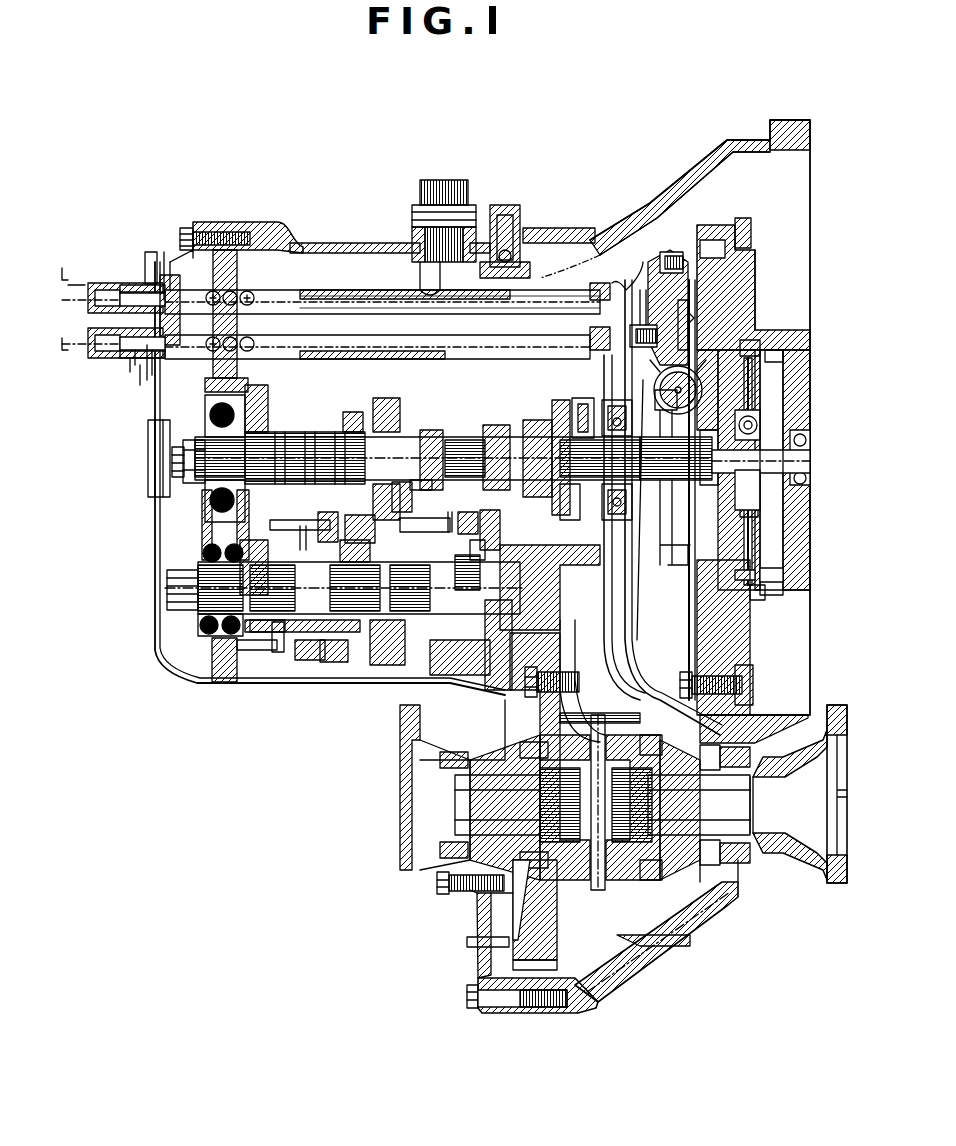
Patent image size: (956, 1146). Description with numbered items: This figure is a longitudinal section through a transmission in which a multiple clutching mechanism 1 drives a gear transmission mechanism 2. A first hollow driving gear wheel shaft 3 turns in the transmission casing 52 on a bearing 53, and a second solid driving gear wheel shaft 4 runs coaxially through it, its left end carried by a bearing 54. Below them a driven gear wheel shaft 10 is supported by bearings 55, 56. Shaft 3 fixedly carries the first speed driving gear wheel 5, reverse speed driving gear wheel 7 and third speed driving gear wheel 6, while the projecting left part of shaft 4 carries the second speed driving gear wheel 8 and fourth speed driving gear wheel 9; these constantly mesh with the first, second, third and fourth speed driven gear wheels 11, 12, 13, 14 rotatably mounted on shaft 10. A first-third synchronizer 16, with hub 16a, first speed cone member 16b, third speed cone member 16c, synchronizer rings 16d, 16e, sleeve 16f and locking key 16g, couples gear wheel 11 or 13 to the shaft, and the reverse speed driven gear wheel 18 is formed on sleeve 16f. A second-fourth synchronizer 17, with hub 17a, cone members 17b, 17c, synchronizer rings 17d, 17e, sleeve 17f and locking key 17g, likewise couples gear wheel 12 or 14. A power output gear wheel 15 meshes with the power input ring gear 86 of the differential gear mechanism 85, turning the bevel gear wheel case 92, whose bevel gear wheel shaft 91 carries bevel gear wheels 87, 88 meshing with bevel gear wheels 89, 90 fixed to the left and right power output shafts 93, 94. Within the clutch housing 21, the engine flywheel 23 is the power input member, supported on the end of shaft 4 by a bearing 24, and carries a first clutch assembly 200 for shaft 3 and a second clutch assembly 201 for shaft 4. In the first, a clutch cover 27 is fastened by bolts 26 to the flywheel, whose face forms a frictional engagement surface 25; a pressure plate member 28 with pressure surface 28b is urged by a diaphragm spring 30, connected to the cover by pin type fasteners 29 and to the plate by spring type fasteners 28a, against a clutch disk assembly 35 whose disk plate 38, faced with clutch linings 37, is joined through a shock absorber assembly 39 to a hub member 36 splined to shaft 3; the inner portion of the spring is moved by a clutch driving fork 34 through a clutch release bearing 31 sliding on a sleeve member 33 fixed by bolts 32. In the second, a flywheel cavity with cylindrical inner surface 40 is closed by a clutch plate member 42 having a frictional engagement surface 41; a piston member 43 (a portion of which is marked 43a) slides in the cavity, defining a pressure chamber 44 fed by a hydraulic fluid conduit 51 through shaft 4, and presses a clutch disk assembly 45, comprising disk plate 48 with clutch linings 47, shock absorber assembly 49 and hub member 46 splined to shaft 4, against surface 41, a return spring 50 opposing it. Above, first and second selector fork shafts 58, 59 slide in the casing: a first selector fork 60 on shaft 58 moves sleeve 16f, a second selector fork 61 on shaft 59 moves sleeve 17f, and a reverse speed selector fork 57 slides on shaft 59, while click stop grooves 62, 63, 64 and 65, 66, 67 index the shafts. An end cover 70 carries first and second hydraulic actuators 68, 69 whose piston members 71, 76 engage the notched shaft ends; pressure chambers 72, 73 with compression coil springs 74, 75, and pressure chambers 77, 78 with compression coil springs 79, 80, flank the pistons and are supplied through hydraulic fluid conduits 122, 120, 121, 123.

The multiple clutching mechanism 1 is at (780, 300).
The gear transmission mechanism 2 is at (322, 680).
The first hollow driving gear wheel shaft 3 is at (460, 440).
The second driving gear wheel shaft 4 is at (332, 440).
The first speed driving gear wheel 5 is at (492, 428).
The third speed driving gear wheel 6 is at (384, 402).
The reverse speed driving gear wheel 7 is at (428, 432).
The second speed driving gear wheel 8 is at (352, 412).
The fourth speed driving gear wheel 9 is at (268, 392).
The driven gear wheel shaft 10 is at (265, 634).
The first speed driven gear wheel 11 is at (490, 679).
The second speed driven gear wheel 12 is at (345, 660).
The third speed driven gear wheel 13 is at (390, 652).
The fourth speed driven gear wheel 14 is at (252, 650).
The power output gear wheel 15 is at (534, 548).
The first-third synchronizer 16 is at (400, 690).
The hub 16a is at (460, 566).
The first speed cone member 16b is at (482, 540).
The third speed cone member 16c is at (396, 504).
The synchronizer ring 16d is at (470, 512).
The synchronizer ring 16e is at (412, 520).
The first-third synchronizer sleeve 16f is at (450, 512).
The locking key 16g is at (428, 488).
The second-fourth synchronizer 17 is at (280, 660).
The hub 17a is at (352, 542).
The second speed cone member 17b is at (368, 530).
The fourth speed cone member 17c is at (268, 548).
The synchronizer ring 17d is at (330, 514).
The synchronizer ring 17e is at (285, 522).
The second-fourth synchronizer sleeve 17f is at (309, 524).
The locking key 17g is at (310, 650).
The reverse speed driven gear wheel 18 is at (430, 690).
The clutch housing 21 is at (673, 200).
The flywheel 23 is at (745, 283).
The bearing 24 is at (806, 436).
The frictional engagement surface 25 is at (690, 282).
The bolts 26 is at (680, 682).
The clutch cover 27 is at (636, 645).
The pressure plate member 28 is at (652, 275).
The spring type fasteners 28a is at (640, 290).
The pressure surface 28b is at (699, 296).
The pin type fasteners 29 is at (662, 368).
The diaphragm spring 30 is at (648, 312).
The clutch release bearing 31 is at (618, 406).
The bolts 32 is at (555, 402).
The sleeve member 33 is at (582, 492).
The clutch driving fork 34 is at (587, 398).
The clutch disk assembly 35 is at (696, 334).
The hub member 36 is at (668, 432).
The clutch linings 37 is at (697, 318).
The disk plate 38 is at (680, 322).
The shock absorber assembly 39 is at (690, 398).
The cylindrical inner surface 40 is at (746, 362).
The frictional engagement surface 41 is at (750, 392).
The clutch plate member 42 is at (738, 566).
The piston member 43 is at (786, 562).
The bore 43a is at (744, 412).
The pressure chamber 44 is at (785, 545).
The clutch disk assembly 45 is at (778, 416).
The hub member 46 is at (708, 440).
The clutch linings 47 is at (742, 530).
The disk plate 48 is at (752, 528).
The shock absorber assembly 49 is at (750, 416).
The return spring 50 is at (762, 598).
The hydraulic fluid conduit 51 is at (810, 468).
The transmission casing 52 is at (352, 247).
The bearing 53 is at (522, 432).
The bearing 54 is at (205, 414).
The bearing 55 is at (590, 640).
The bearing 56 is at (200, 626).
The reverse speed selector fork 57 is at (478, 290).
The first selector fork shaft 58 is at (318, 360).
The second selector fork shaft 59 is at (388, 302).
The first selector fork 60 is at (450, 393).
The second selector fork 61 is at (322, 293).
The click stop groove 62 is at (243, 365).
The click stop groove 63 is at (210, 338).
The click stop groove 64 is at (248, 339).
The click stop groove 65 is at (234, 292).
The click stop groove 66 is at (210, 291).
The click stop groove 67 is at (252, 292).
The first hydraulic actuator 68 is at (130, 372).
The second hydraulic actuator 69 is at (124, 284).
The end cover 70 is at (155, 418).
The first piston member 71 is at (112, 358).
The pressure chamber 72 is at (97, 352).
The pressure chamber 73 is at (136, 358).
The compression coil spring 74 is at (90, 340).
The compression coil spring 75 is at (148, 380).
The second piston member 76 is at (147, 262).
The pressure chamber 77 is at (97, 300).
The pressure chamber 78 is at (167, 262).
The compression coil spring 79 is at (90, 298).
The compression coil spring 80 is at (163, 310).
The differential gear mechanism 85 is at (595, 916).
The differential power input ring gear 86 is at (572, 680).
The bevel gear wheel 87 is at (626, 722).
The bevel gear wheel 88 is at (648, 876).
The bevel gear wheel 89 is at (668, 868).
The bevel gear wheel 90 is at (556, 862).
The bevel gear wheel shaft 91 is at (600, 890).
The bevel gear wheel case 92 is at (558, 910).
The left power output shaft 93 is at (681, 805).
The right power output shaft 94 is at (517, 805).
The hydraulic fluid conduit 120 is at (90, 355).
The hydraulic fluid conduit 121 is at (90, 283).
The hydraulic fluid conduit 122 is at (140, 386).
The hydraulic fluid conduit 123 is at (164, 255).
The first clutch assembly 200 is at (716, 222).
The second clutch assembly 201 is at (768, 596).